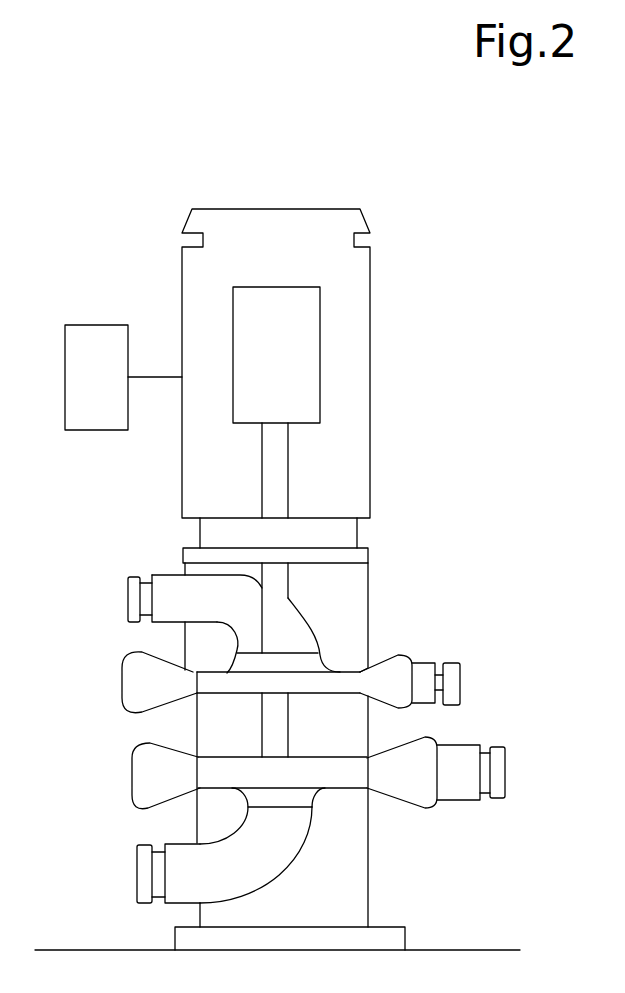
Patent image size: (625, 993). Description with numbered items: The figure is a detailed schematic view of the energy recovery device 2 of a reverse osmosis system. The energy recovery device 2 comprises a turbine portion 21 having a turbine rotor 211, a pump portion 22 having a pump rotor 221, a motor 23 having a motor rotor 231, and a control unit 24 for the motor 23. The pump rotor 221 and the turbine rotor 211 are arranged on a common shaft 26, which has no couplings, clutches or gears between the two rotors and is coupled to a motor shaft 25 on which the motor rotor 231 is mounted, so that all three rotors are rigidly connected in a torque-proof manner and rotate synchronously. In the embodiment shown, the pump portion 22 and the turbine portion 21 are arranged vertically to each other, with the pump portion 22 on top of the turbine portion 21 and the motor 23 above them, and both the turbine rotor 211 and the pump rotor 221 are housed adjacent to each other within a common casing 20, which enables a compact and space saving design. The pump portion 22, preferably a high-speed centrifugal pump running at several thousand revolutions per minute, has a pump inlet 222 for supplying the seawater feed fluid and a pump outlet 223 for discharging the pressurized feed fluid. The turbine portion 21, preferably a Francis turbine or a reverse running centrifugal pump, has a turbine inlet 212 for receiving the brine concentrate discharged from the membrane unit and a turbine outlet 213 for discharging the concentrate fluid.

The energy recovery device 2 is at (336, 158).
The common casing 20 is at (190, 724).
The turbine portion 21 is at (372, 840).
The pump portion 22 is at (370, 618).
The motor 23 is at (372, 416).
The control unit 24 is at (90, 323).
The motor shaft 25 is at (288, 487).
The common shaft 26 is at (292, 588).
The turbine rotor 211 is at (337, 757).
The turbine inlet 212 is at (463, 797).
The turbine outlet 213 is at (145, 903).
The pump rotor 221 is at (227, 670).
The pump inlet 222 is at (165, 575).
The pump outlet 223 is at (420, 662).
The motor rotor 231 is at (320, 340).